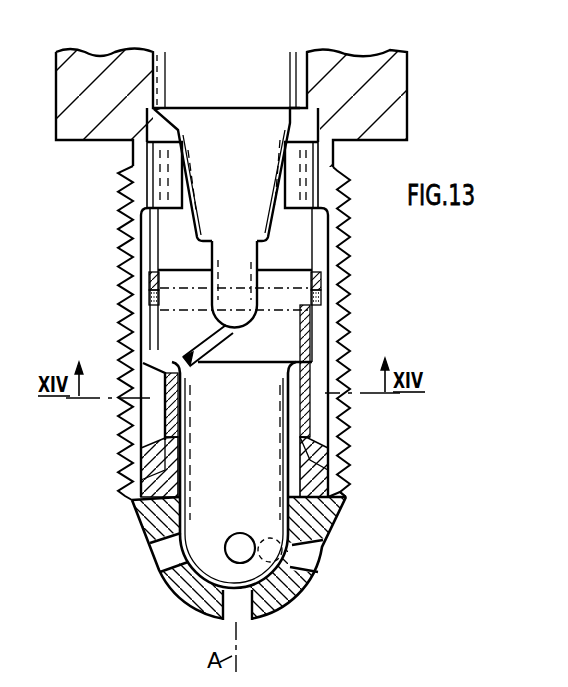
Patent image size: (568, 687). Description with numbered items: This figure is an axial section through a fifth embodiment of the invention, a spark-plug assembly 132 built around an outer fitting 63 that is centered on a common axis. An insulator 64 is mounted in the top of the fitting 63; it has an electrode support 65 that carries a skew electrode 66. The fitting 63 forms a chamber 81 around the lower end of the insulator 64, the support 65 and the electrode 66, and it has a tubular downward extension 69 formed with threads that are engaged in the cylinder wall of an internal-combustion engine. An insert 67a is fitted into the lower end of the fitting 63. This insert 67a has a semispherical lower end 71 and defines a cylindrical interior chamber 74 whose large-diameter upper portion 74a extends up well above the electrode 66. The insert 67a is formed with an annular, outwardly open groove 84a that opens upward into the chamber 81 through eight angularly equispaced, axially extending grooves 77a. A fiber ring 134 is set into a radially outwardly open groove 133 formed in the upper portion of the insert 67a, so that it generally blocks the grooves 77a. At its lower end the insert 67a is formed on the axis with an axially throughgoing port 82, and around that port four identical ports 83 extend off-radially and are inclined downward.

The outer fitting 63 is at (397, 100).
The insulator 64 is at (291, 58).
The electrode support 65 is at (222, 258).
The skew electrode 66 is at (208, 364).
The insert 67a is at (324, 508).
The tubular downward extension 69 is at (340, 460).
The semispherical lower end 71 is at (304, 590).
The cylindrical interior chamber 74 is at (203, 525).
The large-diameter upper portion 74a is at (152, 330).
The axially extending grooves 77a is at (322, 345).
The chamber 81 is at (300, 236).
The axially throughgoing port 82 is at (240, 610).
The off-radial ports 83 is at (316, 553).
The annular outwardly open groove 84a is at (318, 420).
The spark-plug assembly 132 is at (90, 436).
The radially outwardly open groove 133 is at (322, 299).
The fiber ring 134 is at (325, 288).